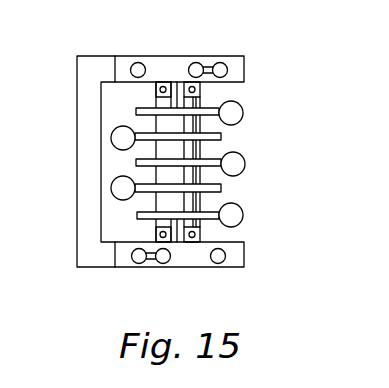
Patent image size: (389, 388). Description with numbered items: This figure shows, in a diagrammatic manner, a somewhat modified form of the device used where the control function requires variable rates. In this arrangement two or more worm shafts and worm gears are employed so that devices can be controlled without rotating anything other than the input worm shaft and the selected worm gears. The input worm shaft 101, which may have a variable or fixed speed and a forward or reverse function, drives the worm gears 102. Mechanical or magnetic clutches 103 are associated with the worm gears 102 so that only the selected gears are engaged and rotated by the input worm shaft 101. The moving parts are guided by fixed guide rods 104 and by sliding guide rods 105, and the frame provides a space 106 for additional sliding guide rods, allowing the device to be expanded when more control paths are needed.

The input worm shaft 101 is at (245, 165).
The worm gears 102 is at (213, 107).
The mechanical or magnetic clutches 103 is at (154, 118).
The fixed guide rods 104 is at (137, 70).
The sliding guide rods 105 is at (196, 66).
The space for additional sliding guide rods 106 is at (84, 269).